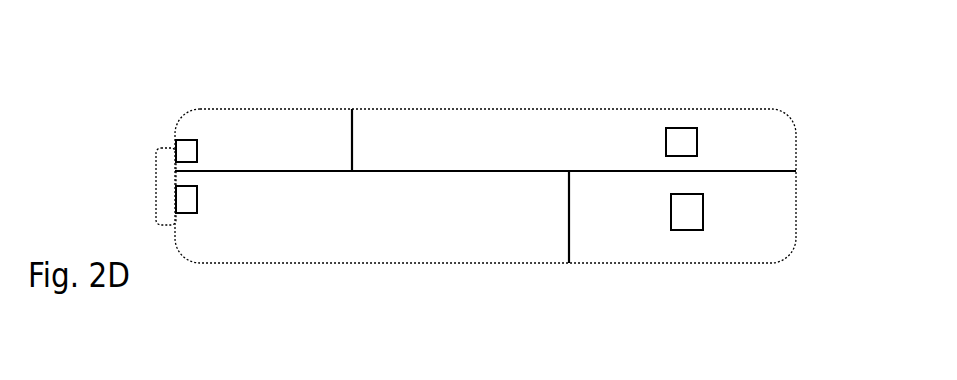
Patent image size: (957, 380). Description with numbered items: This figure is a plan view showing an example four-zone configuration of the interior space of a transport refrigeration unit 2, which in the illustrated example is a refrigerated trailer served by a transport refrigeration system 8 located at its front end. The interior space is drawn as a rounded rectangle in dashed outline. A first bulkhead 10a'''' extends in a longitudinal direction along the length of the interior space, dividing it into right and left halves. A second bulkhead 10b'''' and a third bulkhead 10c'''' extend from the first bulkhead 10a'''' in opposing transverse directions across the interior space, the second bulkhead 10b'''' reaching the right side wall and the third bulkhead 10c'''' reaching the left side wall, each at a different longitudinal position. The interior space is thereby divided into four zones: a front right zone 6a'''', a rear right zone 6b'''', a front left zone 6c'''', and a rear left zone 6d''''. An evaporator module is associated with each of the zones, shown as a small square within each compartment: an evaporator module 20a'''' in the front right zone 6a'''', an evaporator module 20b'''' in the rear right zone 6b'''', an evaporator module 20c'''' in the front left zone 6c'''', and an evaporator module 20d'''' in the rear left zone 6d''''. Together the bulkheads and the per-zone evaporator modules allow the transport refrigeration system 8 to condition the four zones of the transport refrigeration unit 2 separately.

The transport refrigeration unit 2 is at (797, 198).
The transport refrigeration system 8 is at (155, 177).
The front right zone 6a'''' is at (274, 110).
The rear right zone 6b'''' is at (506, 116).
The front left zone 6c'''' is at (382, 247).
The rear left zone 6d'''' is at (620, 248).
The first bulkhead 10a'''' is at (485, 92).
The second bulkhead 10b'''' is at (409, 92).
The third bulkhead 10c'''' is at (527, 261).
The evaporator module 20a'''' is at (158, 117).
The evaporator module 20b'''' is at (740, 106).
The evaporator module 20c'''' is at (207, 253).
The evaporator module 20d'''' is at (728, 264).